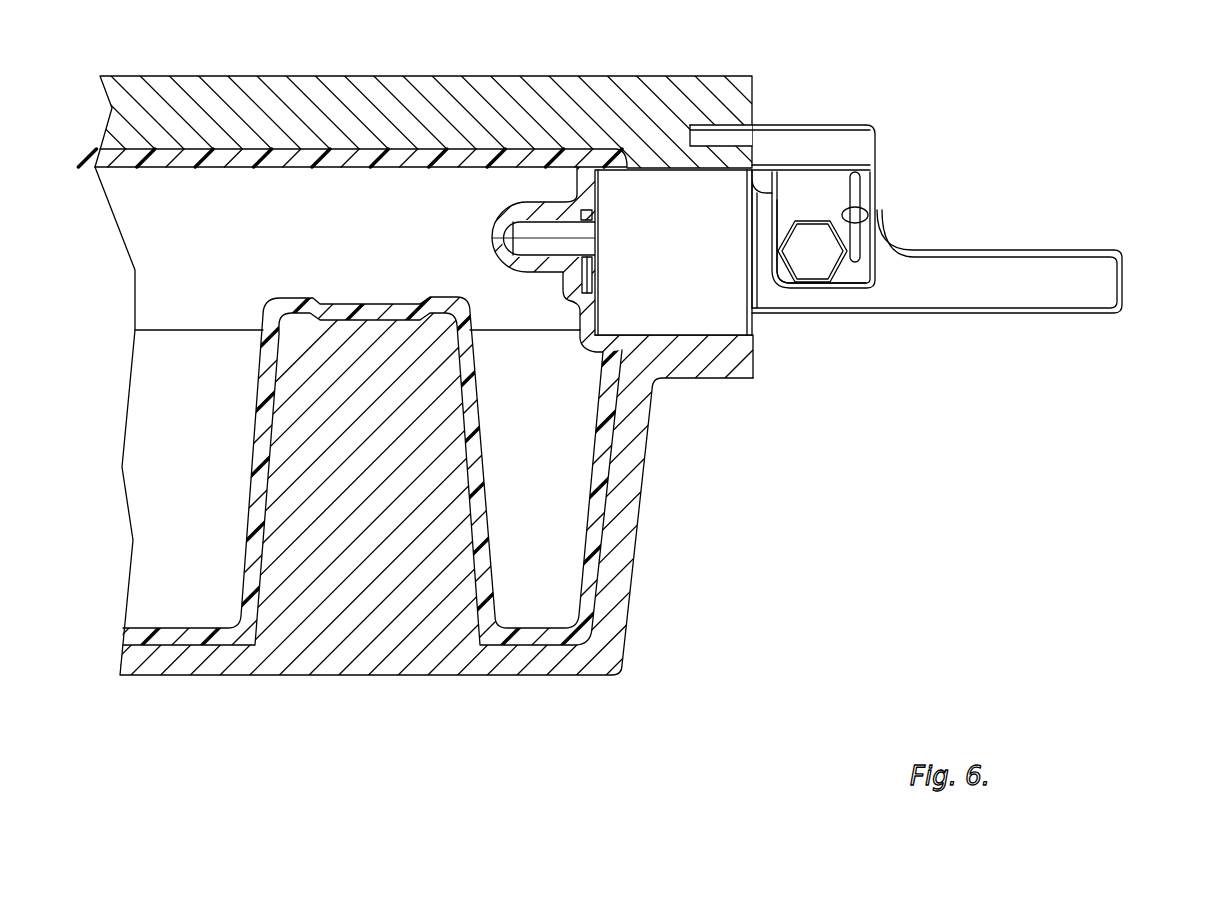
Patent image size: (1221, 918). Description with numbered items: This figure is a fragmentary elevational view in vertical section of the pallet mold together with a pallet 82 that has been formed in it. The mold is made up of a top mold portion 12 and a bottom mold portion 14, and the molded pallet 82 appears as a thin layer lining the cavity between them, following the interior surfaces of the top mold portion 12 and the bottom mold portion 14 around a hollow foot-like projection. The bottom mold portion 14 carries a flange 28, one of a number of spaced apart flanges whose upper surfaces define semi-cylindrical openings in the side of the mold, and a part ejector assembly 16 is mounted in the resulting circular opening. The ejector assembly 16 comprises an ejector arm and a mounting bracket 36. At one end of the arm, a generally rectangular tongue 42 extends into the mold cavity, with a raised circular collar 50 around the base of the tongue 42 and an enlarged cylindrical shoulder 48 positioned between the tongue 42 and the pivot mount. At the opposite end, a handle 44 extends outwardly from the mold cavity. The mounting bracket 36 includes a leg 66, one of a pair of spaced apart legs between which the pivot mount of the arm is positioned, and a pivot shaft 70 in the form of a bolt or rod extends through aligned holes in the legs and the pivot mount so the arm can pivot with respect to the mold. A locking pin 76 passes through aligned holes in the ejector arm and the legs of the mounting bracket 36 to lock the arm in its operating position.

The top mold portion 12 is at (716, 90).
The pallet 82 is at (366, 157).
The bottom mold portion 14 is at (620, 602).
The flange 28 is at (695, 380).
The tongue 42 is at (527, 236).
The collar 50 is at (587, 272).
The shoulder 48 is at (718, 302).
The part ejector assembly 16 is at (1068, 158).
The mounting bracket 36 is at (859, 116).
The handle 44 is at (1088, 296).
The leg 66 is at (858, 268).
The pivot shaft 70 is at (818, 266).
The locking pin 76 is at (868, 215).